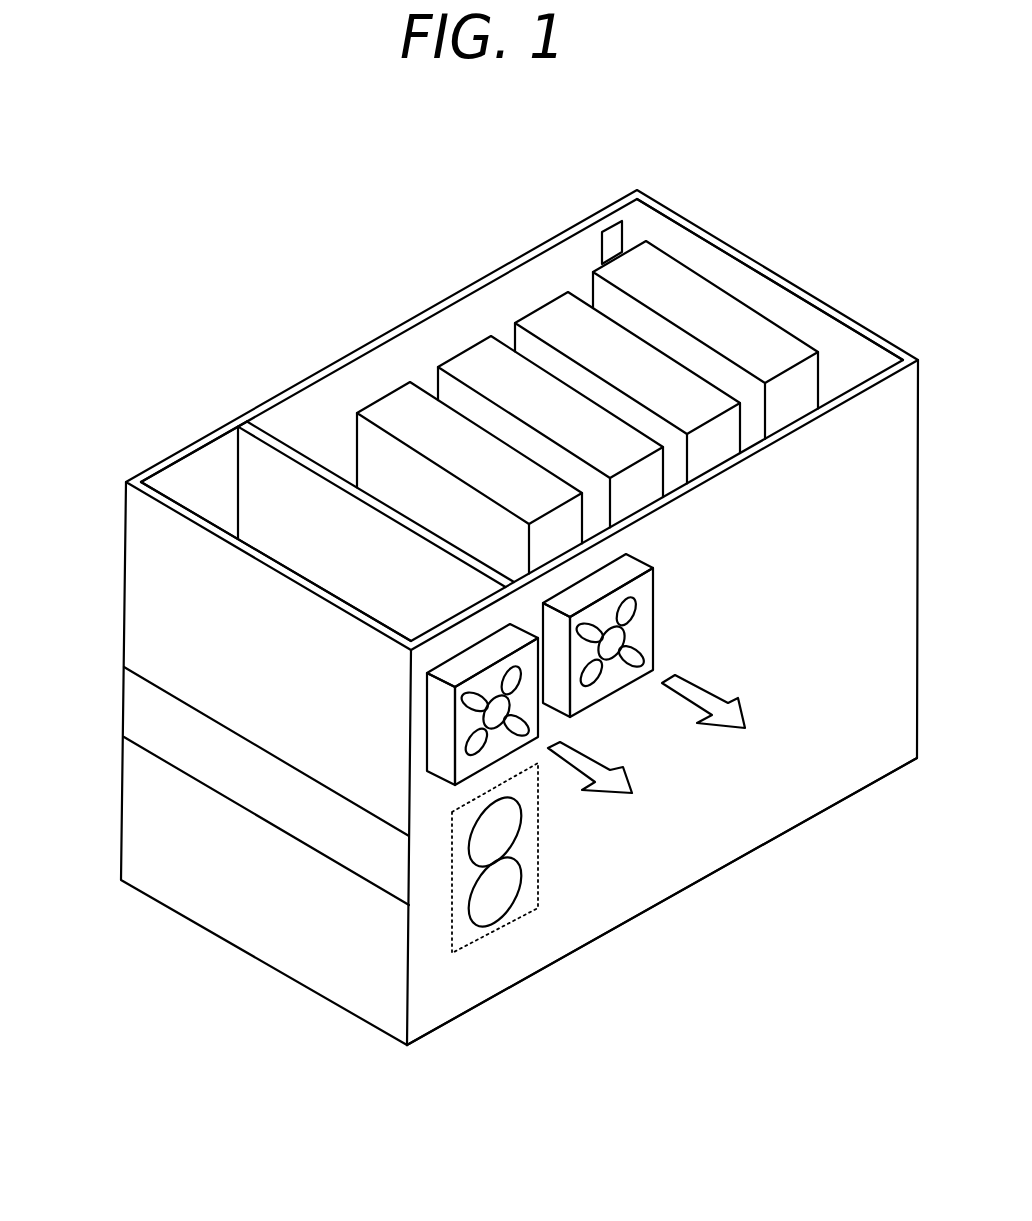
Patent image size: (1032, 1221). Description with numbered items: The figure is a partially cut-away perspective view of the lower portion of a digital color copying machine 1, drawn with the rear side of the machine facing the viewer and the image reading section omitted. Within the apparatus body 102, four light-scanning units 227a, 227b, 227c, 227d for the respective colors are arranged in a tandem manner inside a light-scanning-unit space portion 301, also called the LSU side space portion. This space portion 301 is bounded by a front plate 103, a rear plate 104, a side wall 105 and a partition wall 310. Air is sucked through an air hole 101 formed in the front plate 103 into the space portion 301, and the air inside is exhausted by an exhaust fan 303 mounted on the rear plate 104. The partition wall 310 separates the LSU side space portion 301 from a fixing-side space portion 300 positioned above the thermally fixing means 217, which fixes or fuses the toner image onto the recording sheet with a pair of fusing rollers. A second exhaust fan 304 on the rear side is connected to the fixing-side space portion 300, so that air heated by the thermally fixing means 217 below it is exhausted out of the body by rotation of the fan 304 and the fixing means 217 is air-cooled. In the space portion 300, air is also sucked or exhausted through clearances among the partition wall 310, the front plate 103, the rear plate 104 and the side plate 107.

The digital color copying machine 1 is at (170, 388).
The air hole 101 is at (610, 238).
The apparatus body 102 is at (150, 577).
The front plate 103 is at (541, 262).
The rear plate 104 is at (690, 857).
The side wall 105 is at (818, 333).
The side plate 107 is at (338, 653).
The thermally fixing means 217 is at (472, 942).
The light-scanning unit 227a is at (550, 268).
The light-scanning unit 227b is at (548, 322).
The light-scanning unit 227c is at (473, 363).
The light-scanning unit 227d is at (400, 410).
The fixing-side space portion 300 is at (383, 569).
The LSU side space portion 301 is at (340, 441).
The exhaust fan 303 is at (643, 587).
The exhaust fan 304 is at (530, 722).
The partition wall 310 is at (287, 458).